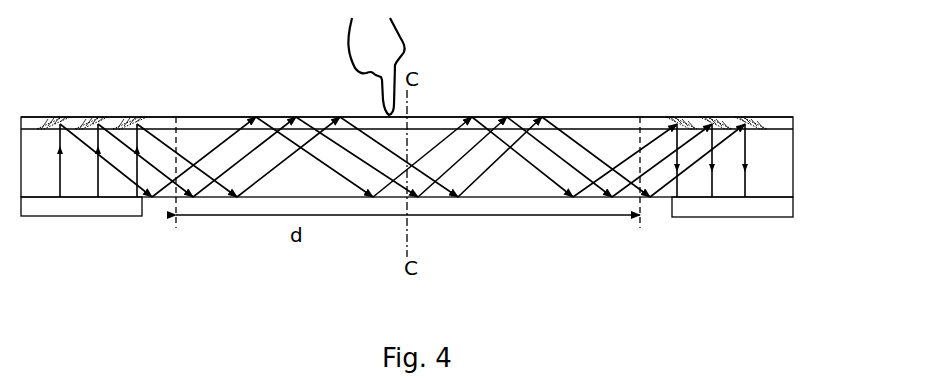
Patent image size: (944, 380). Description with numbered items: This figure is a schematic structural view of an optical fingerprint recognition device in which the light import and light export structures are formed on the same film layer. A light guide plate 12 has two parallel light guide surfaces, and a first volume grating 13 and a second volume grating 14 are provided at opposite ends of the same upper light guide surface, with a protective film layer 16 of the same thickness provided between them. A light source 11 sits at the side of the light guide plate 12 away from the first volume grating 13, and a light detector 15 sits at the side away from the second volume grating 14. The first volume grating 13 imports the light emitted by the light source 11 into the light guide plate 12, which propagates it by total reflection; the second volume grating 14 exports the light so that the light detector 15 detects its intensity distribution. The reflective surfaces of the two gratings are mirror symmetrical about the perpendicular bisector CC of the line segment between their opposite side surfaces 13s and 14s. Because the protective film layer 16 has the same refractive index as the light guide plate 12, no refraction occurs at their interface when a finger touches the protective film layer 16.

The light source 11 is at (82, 216).
The light guide plate 12 is at (793, 163).
The first volume grating 13 is at (98, 117).
The side surface of the first volume grating 13s is at (176, 122).
The second volume grating 14 is at (715, 117).
The side surface of the second volume grating 14s is at (640, 120).
The light detector 15 is at (733, 218).
The protective film layer 16 is at (580, 117).